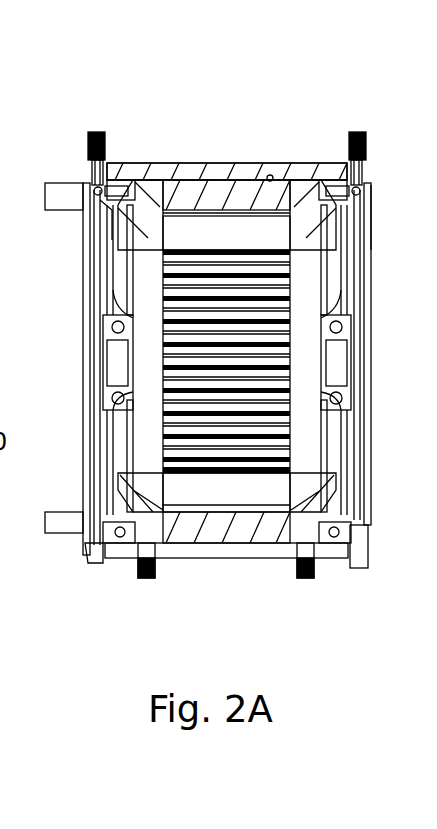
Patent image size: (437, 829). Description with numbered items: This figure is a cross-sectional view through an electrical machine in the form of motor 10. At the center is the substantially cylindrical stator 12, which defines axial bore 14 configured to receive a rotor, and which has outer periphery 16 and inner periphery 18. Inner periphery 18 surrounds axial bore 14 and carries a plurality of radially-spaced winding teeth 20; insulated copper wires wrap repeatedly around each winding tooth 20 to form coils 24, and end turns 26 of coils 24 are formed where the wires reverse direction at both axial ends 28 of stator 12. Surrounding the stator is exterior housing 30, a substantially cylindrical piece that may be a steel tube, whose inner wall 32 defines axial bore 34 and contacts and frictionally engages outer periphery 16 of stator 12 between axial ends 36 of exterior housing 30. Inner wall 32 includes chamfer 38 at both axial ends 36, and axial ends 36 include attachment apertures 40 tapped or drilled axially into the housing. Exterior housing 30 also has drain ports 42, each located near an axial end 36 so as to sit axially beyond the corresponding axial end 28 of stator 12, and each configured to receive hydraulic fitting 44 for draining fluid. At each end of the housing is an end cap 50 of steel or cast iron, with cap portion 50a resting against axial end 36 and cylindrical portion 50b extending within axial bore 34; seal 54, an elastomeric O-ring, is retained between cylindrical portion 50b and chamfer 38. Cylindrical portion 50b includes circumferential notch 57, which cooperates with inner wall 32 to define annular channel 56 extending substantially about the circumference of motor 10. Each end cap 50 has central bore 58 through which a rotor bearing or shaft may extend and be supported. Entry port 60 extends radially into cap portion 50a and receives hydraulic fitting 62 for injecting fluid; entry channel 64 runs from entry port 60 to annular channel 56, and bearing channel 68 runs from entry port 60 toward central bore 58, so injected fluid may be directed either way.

The motor 10 is at (305, 66).
The stator 12 is at (260, 181).
The axial bore 14 is at (298, 440).
The outer periphery 16 is at (270, 175).
The inner periphery 18 is at (200, 262).
The winding teeth 20 is at (231, 470).
The coils 24 is at (284, 530).
The end turns 26 is at (352, 562).
The axial ends 28 is at (153, 270).
The exterior housing 30 is at (187, 170).
The inner wall 32 is at (152, 182).
The axial bore 34 is at (375, 187).
The axial ends 36 is at (66, 138).
The chamfer 38 is at (112, 550).
The attachment apertures 40 is at (100, 528).
The drain port 42 is at (147, 582).
The hydraulic fitting 44 is at (156, 574).
The end cap 50 is at (360, 523).
The cap portion 50a is at (370, 165).
The cylindrical portion 50b is at (346, 185).
The seal 54 is at (113, 183).
The annular channel 56 is at (335, 197).
The circumferential notch 57 is at (100, 200).
The central bore 58 is at (100, 363).
The entry port 60 is at (85, 126).
The hydraulic fitting 62 is at (86, 144).
The entry channel 64 is at (87, 182).
The bearing channel 68 is at (100, 298).